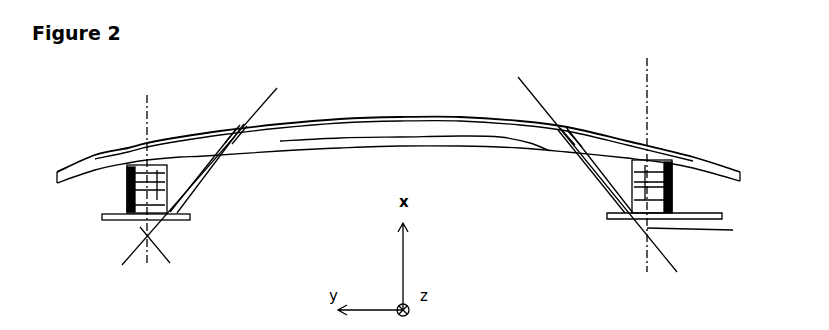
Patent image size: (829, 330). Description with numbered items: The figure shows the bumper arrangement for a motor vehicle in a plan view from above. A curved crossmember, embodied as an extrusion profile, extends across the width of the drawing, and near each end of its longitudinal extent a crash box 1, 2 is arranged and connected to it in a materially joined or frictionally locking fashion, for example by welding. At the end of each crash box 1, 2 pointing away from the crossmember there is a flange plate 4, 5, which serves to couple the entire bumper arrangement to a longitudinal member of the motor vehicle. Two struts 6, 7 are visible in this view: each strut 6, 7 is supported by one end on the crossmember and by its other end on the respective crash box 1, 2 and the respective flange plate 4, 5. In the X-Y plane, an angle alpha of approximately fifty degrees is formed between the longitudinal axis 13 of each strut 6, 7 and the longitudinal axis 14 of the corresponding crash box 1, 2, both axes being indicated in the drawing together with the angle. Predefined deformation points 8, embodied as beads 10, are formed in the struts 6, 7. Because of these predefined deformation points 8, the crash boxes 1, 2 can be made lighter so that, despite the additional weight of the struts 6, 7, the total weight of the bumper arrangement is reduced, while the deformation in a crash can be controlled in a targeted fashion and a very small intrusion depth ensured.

The crash box 1 is at (668, 182).
The crash box 2 is at (394, 117).
The flange plate 4 is at (690, 217).
The flange plate 5 is at (117, 220).
The strut 6 is at (605, 197).
The strut 7 is at (190, 197).
The predefined deformation point 8 is at (587, 173).
The bead 10 is at (407, 164).
The longitudinal axis of the strut 13 is at (650, 77).
The longitudinal axis of the crash box 14 is at (533, 88).